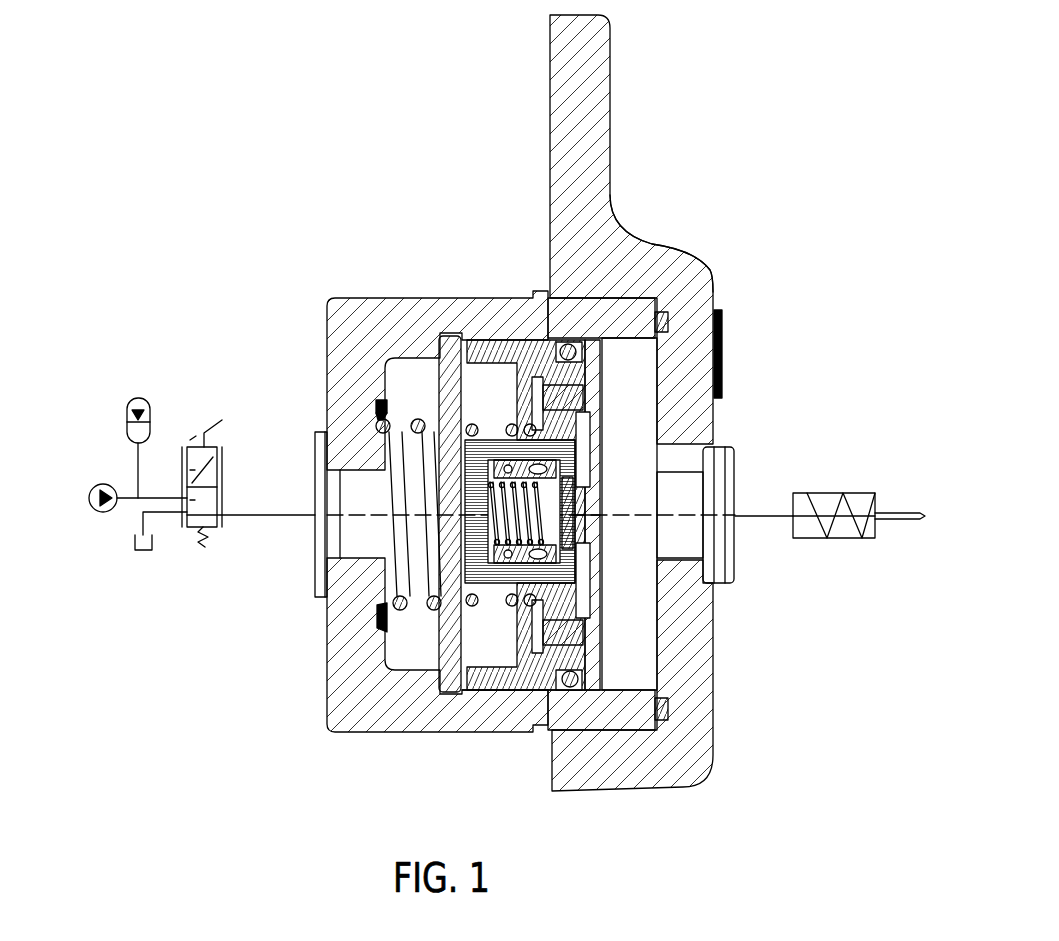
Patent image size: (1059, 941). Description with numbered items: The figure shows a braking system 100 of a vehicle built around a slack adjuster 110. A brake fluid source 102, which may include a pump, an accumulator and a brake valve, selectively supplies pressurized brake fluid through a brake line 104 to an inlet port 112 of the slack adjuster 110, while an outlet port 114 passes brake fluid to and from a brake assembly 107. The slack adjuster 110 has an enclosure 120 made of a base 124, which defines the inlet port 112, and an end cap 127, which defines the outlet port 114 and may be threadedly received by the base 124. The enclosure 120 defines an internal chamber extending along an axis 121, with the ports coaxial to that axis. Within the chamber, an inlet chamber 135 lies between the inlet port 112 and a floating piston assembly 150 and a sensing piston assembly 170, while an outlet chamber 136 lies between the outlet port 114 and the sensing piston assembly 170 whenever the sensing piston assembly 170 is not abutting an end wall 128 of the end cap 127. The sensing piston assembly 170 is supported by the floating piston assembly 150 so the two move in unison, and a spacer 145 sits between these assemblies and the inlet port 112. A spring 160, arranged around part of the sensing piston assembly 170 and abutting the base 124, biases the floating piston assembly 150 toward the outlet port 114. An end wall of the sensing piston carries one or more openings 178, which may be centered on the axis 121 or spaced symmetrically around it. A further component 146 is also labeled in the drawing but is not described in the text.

The braking system 100 is at (210, 68).
The brake fluid source 102 is at (116, 398).
The brake line 104 is at (270, 515).
The brake assembly 107 is at (836, 548).
The slack adjuster 110 is at (376, 218).
The inlet port 112 is at (298, 558).
The outlet port 114 is at (750, 488).
The enclosure 120 is at (633, 135).
The axis 121 is at (672, 513).
The base 124 is at (500, 315).
The end cap 127 is at (672, 255).
The end wall 128 is at (722, 350).
The inlet chamber 135 is at (405, 633).
The outlet chamber 136 is at (640, 668).
The spacer 145 is at (449, 335).
The seal 146 is at (572, 680).
The floating piston assembly 150 is at (529, 682).
The spring 160 is at (413, 420).
The sensing piston assembly 170 is at (478, 594).
The opening 178 is at (586, 523).